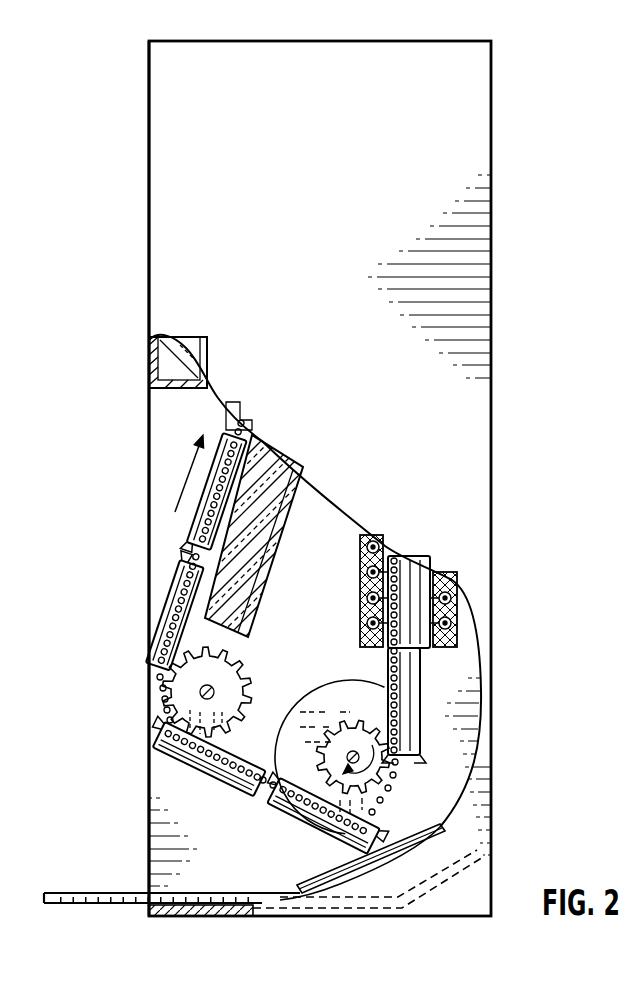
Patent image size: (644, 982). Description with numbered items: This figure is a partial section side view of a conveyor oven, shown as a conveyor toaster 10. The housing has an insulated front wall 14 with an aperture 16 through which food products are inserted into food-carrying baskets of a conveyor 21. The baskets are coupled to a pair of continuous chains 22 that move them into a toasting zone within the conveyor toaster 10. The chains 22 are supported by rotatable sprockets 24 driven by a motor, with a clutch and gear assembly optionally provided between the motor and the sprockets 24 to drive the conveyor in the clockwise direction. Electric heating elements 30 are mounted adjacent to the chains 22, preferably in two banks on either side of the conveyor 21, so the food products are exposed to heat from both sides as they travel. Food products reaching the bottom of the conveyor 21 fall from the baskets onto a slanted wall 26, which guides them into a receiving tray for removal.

The conveyor toaster 10 is at (522, 38).
The insulated front wall 14 is at (149, 272).
The aperture 16 is at (160, 472).
The conveyor 21 is at (176, 538).
The continuous chains 22 is at (400, 776).
The rotatable sprockets 24 is at (337, 712).
The slanted wall 26 is at (330, 875).
The electric heating elements 30 is at (367, 566).